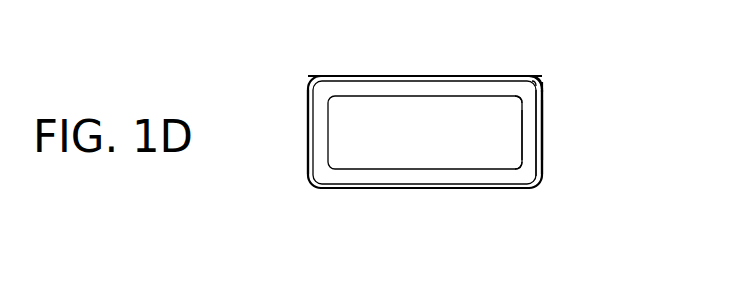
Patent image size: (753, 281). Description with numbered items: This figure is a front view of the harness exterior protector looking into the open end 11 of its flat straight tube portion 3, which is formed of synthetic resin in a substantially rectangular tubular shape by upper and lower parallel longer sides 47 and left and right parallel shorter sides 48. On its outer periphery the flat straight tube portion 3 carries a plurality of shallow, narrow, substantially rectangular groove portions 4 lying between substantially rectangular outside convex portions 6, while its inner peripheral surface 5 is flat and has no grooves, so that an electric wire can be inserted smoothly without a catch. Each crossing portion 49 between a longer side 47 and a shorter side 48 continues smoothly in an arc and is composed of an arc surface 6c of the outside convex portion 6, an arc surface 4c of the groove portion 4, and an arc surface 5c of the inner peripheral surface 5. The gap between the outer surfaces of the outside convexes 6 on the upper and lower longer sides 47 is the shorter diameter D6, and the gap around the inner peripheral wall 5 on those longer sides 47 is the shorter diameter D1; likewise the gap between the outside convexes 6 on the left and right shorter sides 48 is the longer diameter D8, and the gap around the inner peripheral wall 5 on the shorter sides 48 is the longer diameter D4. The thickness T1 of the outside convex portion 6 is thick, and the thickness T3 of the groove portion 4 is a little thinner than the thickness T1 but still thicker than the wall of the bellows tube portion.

The flat straight tube portion 3 is at (480, 27).
The groove portion 4 is at (541, 140).
The arc surface of groove portion 4c is at (533, 76).
The inner peripheral surface 5 is at (518, 133).
The arc surface of inner peripheral surface 5c is at (517, 103).
The outside convex portion 6 is at (543, 115).
The arc surface of outside convex portion 6c is at (541, 86).
The open end 11 is at (502, 158).
The longer side 47 is at (439, 76).
The shorter side 48 is at (307, 110).
The crossing portion 49 is at (545, 88).
The thickness of groove portion T3 is at (352, 127).
The thickness of outside convex portion T1 is at (385, 127).
The shorter diameter D6 is at (308, 76).
The shorter diameter D1 is at (328, 96).
The longer diameter D4 is at (328, 169).
The longer diameter D8 is at (308, 188).